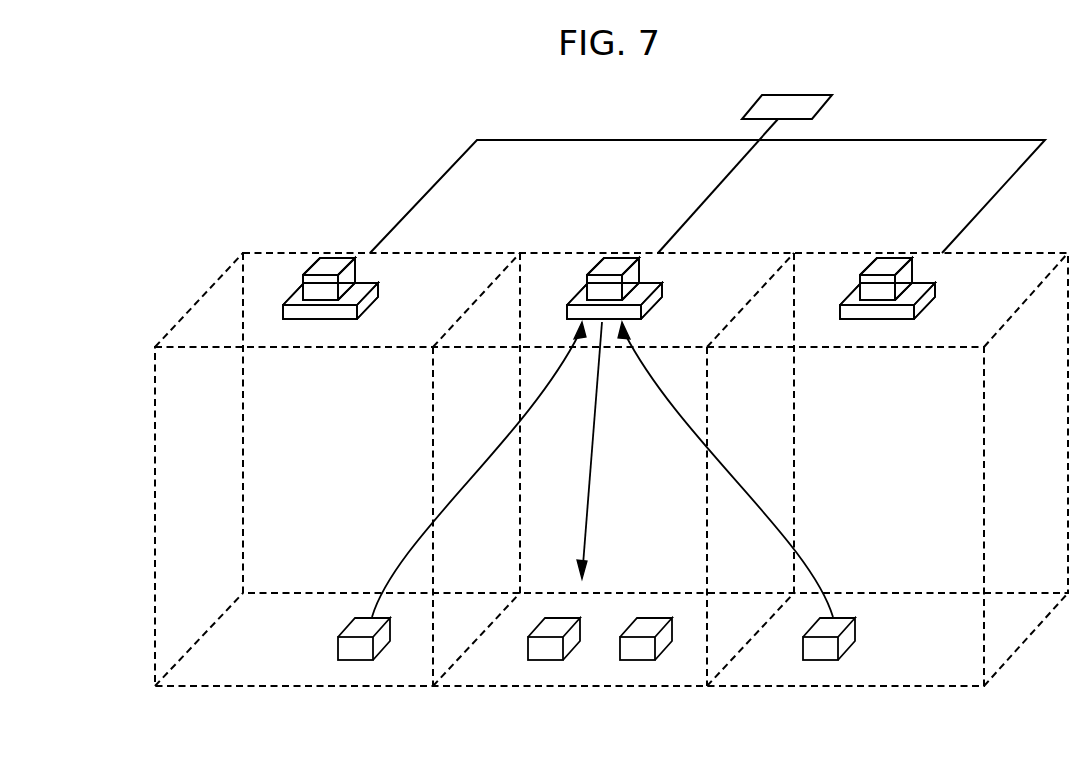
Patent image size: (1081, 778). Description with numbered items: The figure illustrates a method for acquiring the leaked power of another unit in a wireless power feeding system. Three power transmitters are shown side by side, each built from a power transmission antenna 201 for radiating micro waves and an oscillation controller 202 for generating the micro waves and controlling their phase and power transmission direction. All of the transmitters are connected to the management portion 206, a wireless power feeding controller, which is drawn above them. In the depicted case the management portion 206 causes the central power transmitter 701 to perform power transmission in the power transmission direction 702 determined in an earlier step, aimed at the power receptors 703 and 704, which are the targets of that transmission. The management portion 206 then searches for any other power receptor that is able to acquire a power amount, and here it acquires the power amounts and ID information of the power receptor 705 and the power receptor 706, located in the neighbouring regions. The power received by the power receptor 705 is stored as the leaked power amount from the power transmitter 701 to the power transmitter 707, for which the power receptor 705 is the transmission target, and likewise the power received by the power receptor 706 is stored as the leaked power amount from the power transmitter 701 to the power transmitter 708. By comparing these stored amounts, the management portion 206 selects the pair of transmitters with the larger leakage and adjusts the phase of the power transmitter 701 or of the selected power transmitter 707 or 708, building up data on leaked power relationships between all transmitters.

The power transmission antenna 201 is at (592, 259).
The oscillation controller 202 is at (607, 249).
The management portion 206 is at (817, 110).
The power transmitter 701 is at (595, 239).
The power transmission direction 702 is at (592, 480).
The power receptor 703 is at (548, 660).
The power receptor 704 is at (640, 660).
The power receptor 705 is at (357, 660).
The power receptor 706 is at (822, 660).
The power transmitter 707 is at (311, 239).
The power transmitter 708 is at (868, 239).